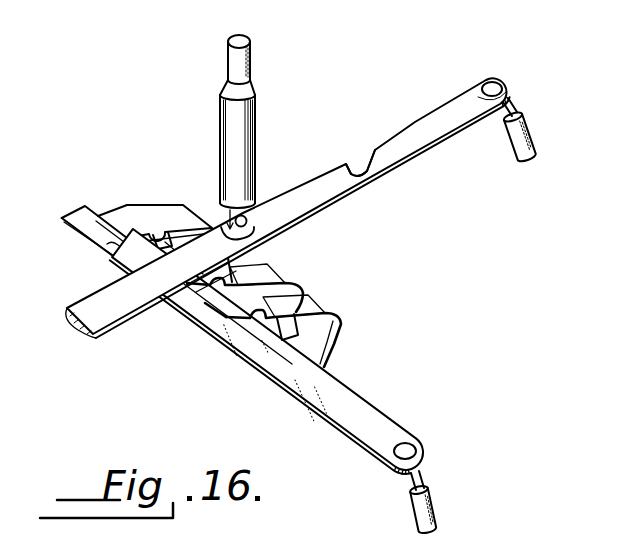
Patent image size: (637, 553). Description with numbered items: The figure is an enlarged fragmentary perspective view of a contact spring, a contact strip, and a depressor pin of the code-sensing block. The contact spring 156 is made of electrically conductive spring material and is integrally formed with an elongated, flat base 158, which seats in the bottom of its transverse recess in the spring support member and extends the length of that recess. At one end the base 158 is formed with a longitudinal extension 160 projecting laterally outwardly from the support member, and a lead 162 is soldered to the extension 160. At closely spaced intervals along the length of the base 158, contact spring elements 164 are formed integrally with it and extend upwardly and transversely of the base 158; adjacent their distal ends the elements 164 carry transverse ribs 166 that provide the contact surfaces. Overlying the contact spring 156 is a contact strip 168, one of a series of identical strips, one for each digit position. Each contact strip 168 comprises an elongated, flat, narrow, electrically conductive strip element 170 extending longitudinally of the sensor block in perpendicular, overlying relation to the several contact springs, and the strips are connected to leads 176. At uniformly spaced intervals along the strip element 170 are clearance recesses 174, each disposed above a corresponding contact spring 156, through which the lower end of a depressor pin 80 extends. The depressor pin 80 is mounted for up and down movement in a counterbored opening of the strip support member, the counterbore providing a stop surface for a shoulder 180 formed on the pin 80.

The depressor pin 80 is at (228, 121).
The contact spring 156 is at (298, 381).
The base 158 is at (67, 236).
The longitudinal extension 160 is at (328, 418).
The lead 162 is at (432, 493).
The contact spring element 164 is at (272, 266).
The transverse rib 166 is at (227, 316).
The contact strip 168 is at (419, 122).
The strip element 170 is at (288, 207).
The clearance recess 174 is at (243, 212).
The lead 176 is at (525, 125).
The shoulder 180 is at (223, 80).